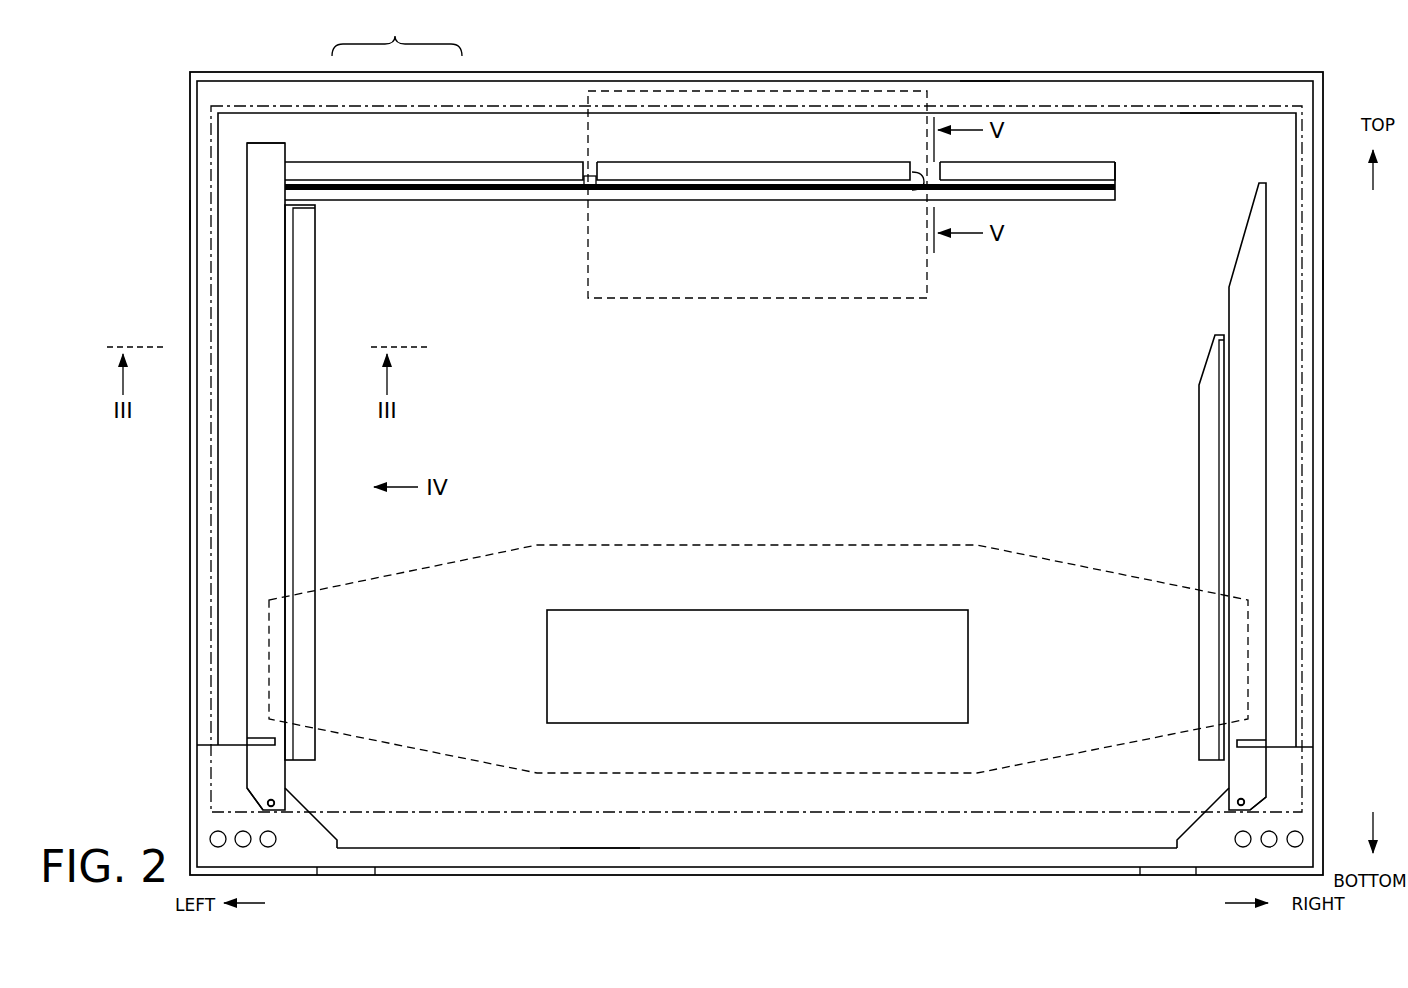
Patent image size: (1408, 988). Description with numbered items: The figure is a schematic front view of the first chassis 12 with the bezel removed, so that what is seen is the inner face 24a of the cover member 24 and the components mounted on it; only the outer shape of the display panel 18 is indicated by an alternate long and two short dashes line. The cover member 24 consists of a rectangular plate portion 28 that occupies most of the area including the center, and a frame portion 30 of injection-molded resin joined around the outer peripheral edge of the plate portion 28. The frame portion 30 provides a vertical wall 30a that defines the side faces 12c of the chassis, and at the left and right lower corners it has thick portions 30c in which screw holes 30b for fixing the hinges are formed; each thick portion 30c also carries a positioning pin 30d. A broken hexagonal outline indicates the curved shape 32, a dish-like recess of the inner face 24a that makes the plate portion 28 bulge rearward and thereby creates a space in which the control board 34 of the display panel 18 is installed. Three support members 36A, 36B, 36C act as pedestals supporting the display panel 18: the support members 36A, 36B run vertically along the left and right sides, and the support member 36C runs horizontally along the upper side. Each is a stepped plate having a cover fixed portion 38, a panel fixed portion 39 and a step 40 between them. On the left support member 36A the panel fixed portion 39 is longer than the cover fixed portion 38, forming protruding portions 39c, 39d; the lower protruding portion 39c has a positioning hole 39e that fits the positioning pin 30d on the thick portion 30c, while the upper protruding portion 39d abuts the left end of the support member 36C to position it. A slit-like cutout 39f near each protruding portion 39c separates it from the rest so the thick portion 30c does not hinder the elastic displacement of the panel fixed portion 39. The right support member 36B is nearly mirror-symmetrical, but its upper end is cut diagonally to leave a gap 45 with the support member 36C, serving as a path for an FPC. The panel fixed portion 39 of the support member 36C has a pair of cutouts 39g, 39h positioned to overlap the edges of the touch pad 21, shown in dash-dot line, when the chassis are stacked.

The first chassis 12 is at (112, 53).
The side faces 12c is at (795, 79).
The display panel 18 is at (989, 98).
The touch pad 21 is at (752, 302).
The cover member 24 is at (397, 33).
The inner face 24a is at (592, 745).
The plate portion 28 is at (428, 132).
The frame portion 30 is at (367, 95).
The vertical wall 30a is at (196, 210).
The screw holes 30b is at (219, 847).
The thick portions 30c is at (310, 833).
The positioning pin 30d is at (755, 803).
The curved shape 32 is at (775, 540).
The control board 34 is at (910, 663).
The support member 36A is at (246, 278).
The support member 36B is at (1269, 402).
The support member 36C is at (431, 203).
The cover fixed portion 38 is at (305, 232).
The panel fixed portion 39 is at (680, 175).
The protruding portion 39c is at (262, 798).
The protruding portion 39d is at (275, 165).
The positioning hole 39e is at (266, 805).
The cutout 39f is at (262, 740).
The cutout 39g is at (585, 181).
The cutout 39h is at (916, 186).
The step 40 is at (293, 280).
The gap 45 is at (1200, 150).